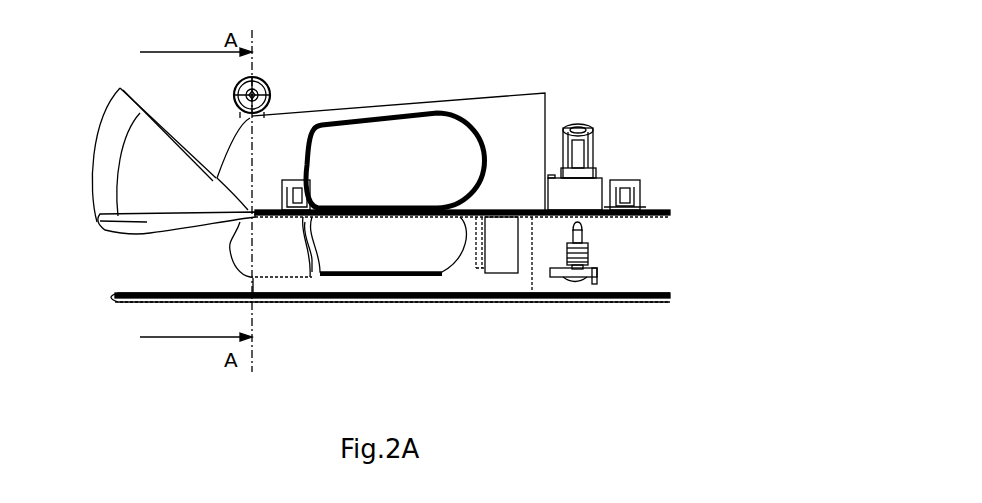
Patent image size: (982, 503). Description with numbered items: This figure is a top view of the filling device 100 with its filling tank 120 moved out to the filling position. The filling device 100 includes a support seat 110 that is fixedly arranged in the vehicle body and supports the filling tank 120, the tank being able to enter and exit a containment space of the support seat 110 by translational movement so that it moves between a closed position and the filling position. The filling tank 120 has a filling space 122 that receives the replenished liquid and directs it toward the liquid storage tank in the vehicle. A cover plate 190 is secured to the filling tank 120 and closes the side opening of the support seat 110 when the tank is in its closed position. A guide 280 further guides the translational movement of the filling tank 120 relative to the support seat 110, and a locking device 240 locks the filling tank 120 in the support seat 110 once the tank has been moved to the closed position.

The filling device 100 is at (754, 121).
The support seat 110 is at (498, 118).
The filling tank 120 is at (450, 280).
The filling space 122 is at (398, 255).
The cover plate 190 is at (338, 293).
The locking device 240 is at (590, 247).
The guide 280 is at (503, 223).